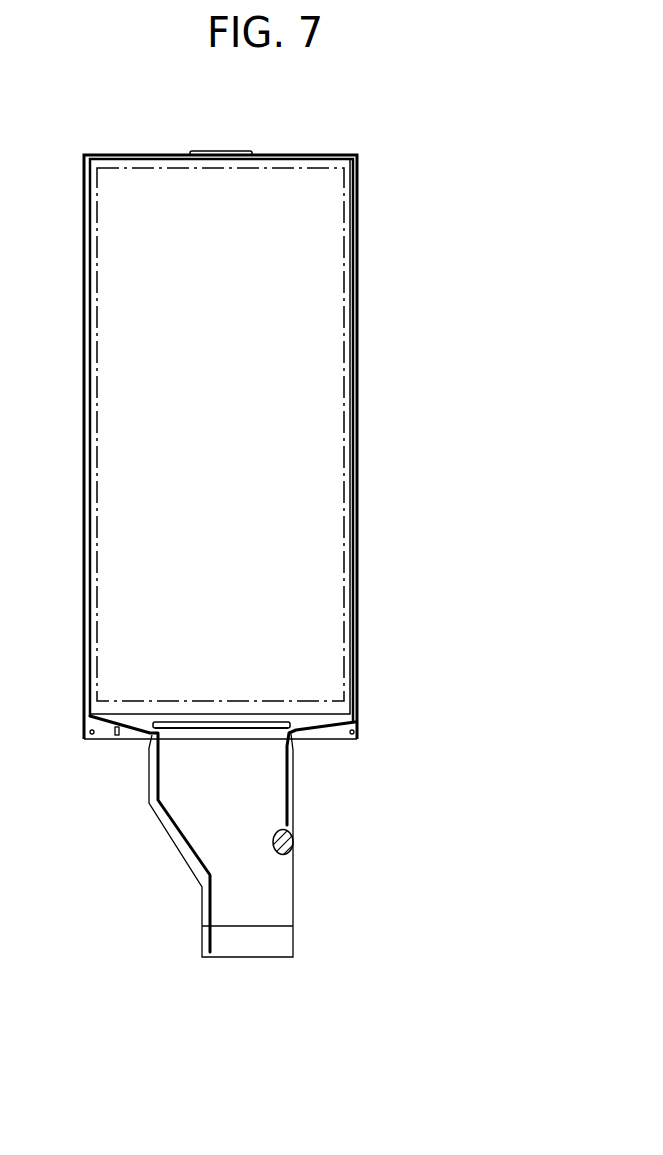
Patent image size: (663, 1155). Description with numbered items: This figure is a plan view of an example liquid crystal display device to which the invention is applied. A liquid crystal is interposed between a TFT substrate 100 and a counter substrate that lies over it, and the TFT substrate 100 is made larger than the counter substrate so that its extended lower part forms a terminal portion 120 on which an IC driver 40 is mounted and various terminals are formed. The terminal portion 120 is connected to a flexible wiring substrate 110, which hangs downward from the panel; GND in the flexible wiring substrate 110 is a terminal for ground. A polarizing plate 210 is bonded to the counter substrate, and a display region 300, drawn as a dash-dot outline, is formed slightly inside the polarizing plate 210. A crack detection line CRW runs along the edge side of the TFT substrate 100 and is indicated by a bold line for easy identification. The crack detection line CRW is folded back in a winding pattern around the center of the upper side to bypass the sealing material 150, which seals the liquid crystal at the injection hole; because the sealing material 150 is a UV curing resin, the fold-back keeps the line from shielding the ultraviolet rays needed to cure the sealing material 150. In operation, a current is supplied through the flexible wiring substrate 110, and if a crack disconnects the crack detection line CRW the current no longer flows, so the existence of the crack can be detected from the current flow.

The sealing material 150 is at (233, 153).
The polarizing plate 210 is at (354, 296).
The display region 300 is at (345, 343).
The crack detection line CRW is at (355, 390).
The TFT substrate 100 is at (358, 725).
The terminal portion 120 is at (330, 733).
The IC driver 40 is at (205, 723).
The terminal for ground GND is at (294, 841).
The flexible wiring substrate 110 is at (294, 893).